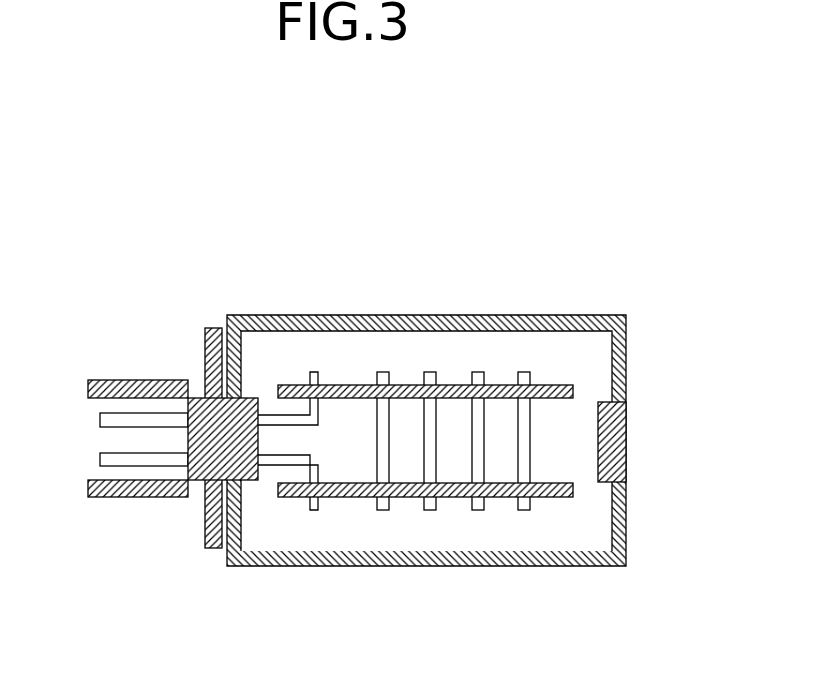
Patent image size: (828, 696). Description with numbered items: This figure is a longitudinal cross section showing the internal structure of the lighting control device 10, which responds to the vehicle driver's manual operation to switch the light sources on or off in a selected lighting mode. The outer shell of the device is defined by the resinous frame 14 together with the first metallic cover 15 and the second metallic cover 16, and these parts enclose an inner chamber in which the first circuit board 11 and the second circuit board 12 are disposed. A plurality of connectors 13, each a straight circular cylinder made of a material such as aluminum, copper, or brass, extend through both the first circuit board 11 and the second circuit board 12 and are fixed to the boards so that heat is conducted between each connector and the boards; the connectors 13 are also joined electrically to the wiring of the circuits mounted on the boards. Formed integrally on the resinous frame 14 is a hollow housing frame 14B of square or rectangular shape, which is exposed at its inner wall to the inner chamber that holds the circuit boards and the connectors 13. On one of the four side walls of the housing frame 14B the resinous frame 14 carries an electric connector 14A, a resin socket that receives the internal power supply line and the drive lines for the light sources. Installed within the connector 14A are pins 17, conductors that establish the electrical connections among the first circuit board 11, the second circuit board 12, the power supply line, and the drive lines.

The lighting control device 10 is at (417, 176).
The first circuit board 11 is at (348, 385).
The second circuit board 12 is at (345, 497).
The connectors 13 is at (384, 372).
The resinous frame 14 is at (205, 342).
The electric connector 14A is at (131, 497).
The hollow housing frame 14B is at (626, 443).
The first metallic cover 15 is at (582, 315).
The second metallic cover 16 is at (581, 566).
The pins 17 is at (268, 415).